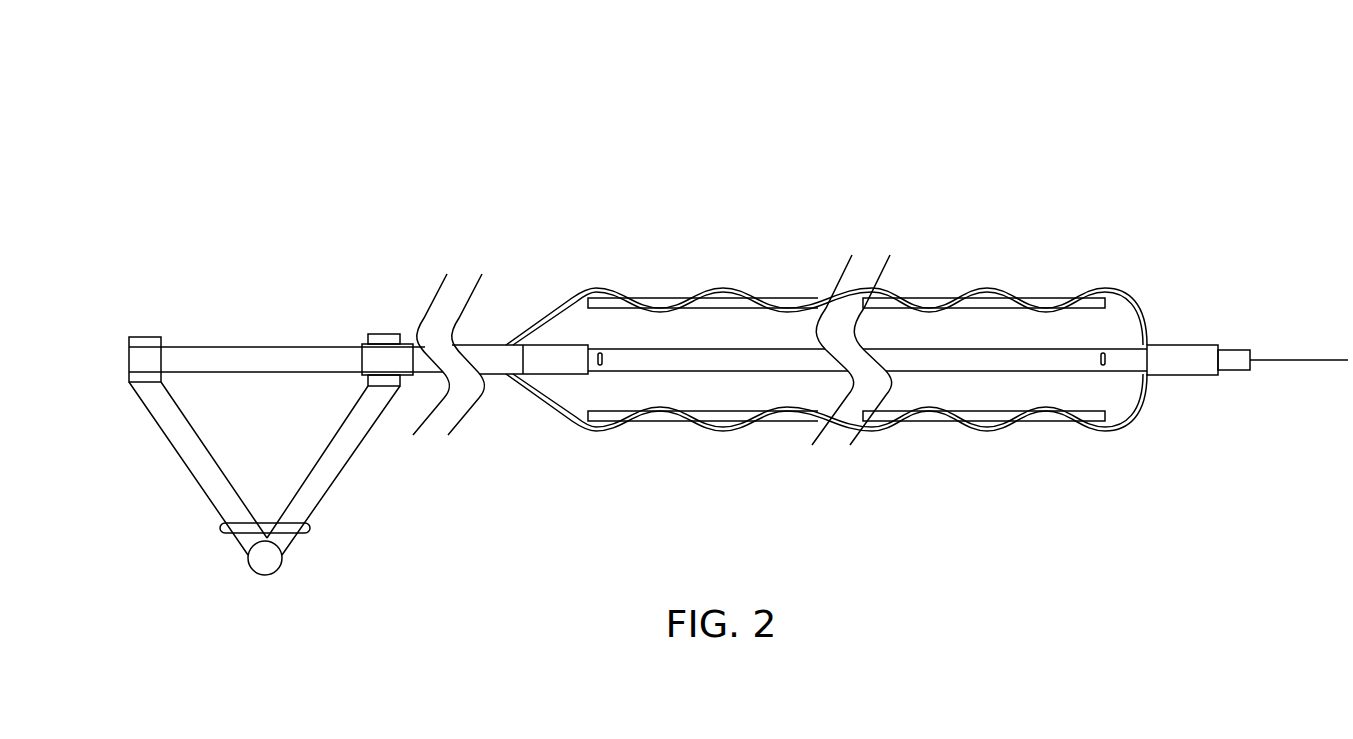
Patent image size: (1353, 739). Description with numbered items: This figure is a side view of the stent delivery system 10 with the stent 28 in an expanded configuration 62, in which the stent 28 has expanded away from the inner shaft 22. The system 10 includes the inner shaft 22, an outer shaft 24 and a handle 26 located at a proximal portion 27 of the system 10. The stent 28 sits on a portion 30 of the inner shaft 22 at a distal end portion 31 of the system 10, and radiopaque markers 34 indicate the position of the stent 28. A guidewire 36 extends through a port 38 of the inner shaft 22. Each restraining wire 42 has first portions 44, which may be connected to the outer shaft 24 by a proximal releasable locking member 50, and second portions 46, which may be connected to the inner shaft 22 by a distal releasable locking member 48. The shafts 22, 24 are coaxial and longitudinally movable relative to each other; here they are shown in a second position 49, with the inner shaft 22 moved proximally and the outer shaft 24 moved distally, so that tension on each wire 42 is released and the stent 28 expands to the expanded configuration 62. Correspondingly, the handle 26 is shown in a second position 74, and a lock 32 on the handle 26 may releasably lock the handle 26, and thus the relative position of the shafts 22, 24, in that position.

The stent delivery system 10 is at (948, 130).
The inner shaft 22 is at (1118, 358).
The outer shaft 24 is at (492, 378).
The handle 26 is at (173, 507).
The proximal portion 27 is at (107, 343).
The stent 28 is at (1058, 297).
The portion of the inner shaft 30 is at (1050, 365).
The distal end portion 31 is at (1198, 292).
The lock 32 is at (223, 528).
The radiopaque markers 34 is at (600, 368).
The guidewire 36 is at (1308, 358).
The port 38 is at (1253, 350).
The restraining wire 42 is at (735, 280).
The first portions of the wires 44 is at (525, 328).
The second portions of the wires 46 is at (1142, 330).
The distal releasable locking member 48 is at (1192, 380).
The second position 49 is at (555, 255).
The proximal releasable locking member 50 is at (493, 355).
The expanded configuration 62 is at (993, 213).
The second position of the handle 74 is at (330, 565).